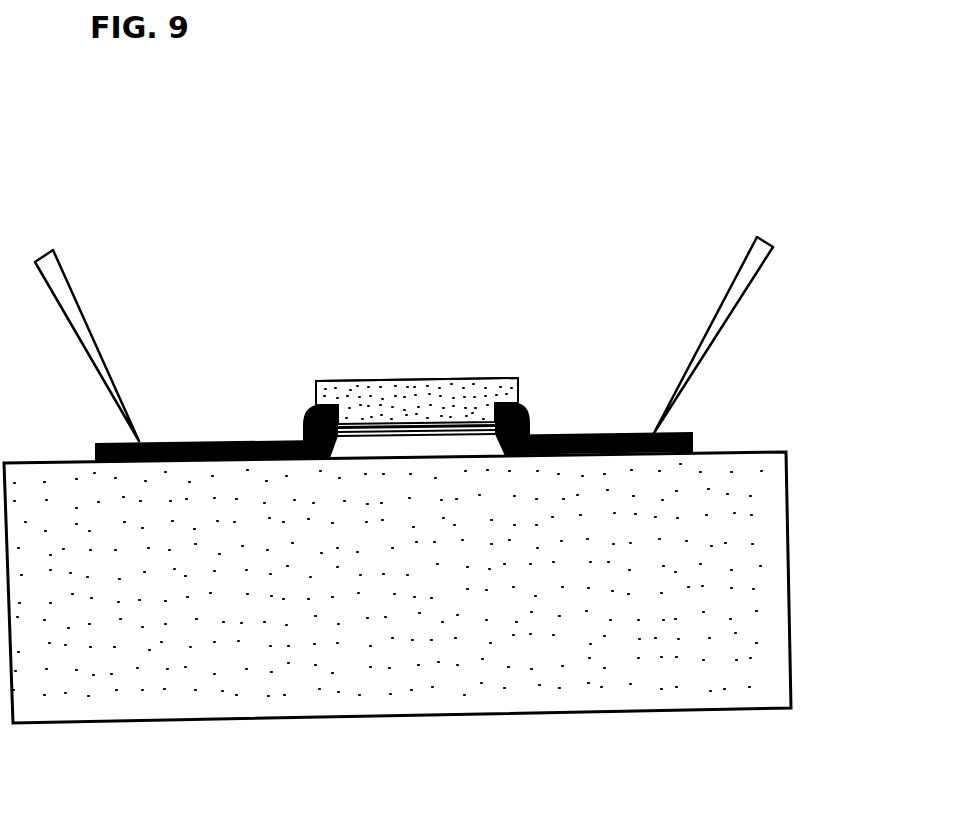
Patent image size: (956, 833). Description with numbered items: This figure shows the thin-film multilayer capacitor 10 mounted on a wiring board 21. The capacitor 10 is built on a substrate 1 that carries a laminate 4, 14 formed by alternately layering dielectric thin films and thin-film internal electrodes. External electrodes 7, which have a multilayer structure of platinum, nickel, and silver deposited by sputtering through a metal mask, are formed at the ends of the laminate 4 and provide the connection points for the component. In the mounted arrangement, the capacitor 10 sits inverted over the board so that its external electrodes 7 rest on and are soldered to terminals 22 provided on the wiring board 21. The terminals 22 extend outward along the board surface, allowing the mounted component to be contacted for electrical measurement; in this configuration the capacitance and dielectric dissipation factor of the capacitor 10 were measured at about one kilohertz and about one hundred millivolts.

The substrate 1 is at (489, 378).
The laminate 4 is at (401, 379).
The bonding layer 14 is at (397, 436).
The external electrodes 7 is at (326, 408).
The thin-film multilayer capacitor 10 is at (421, 372).
The wiring board 21 is at (486, 710).
The terminals 22 is at (226, 442).